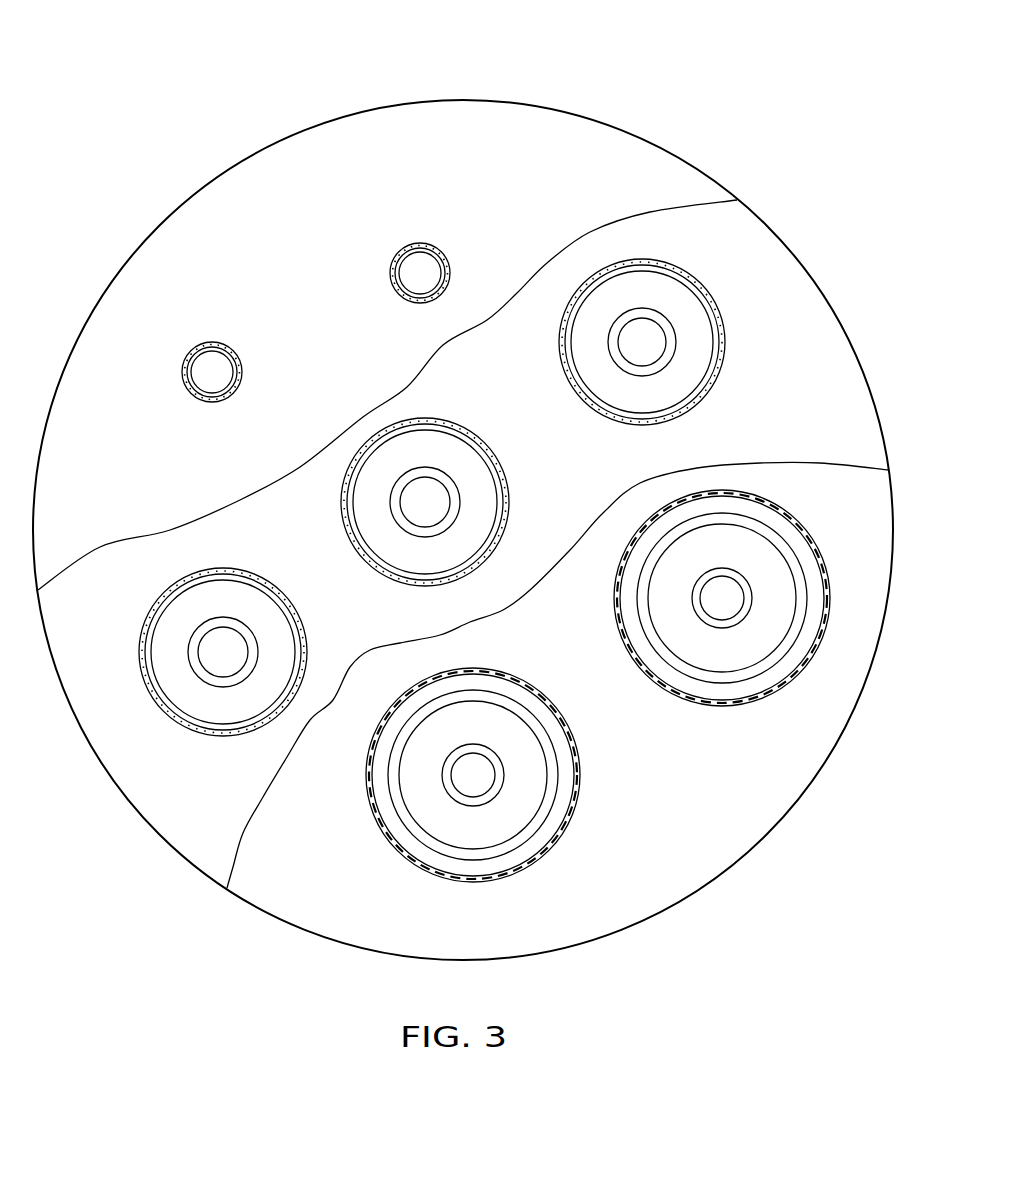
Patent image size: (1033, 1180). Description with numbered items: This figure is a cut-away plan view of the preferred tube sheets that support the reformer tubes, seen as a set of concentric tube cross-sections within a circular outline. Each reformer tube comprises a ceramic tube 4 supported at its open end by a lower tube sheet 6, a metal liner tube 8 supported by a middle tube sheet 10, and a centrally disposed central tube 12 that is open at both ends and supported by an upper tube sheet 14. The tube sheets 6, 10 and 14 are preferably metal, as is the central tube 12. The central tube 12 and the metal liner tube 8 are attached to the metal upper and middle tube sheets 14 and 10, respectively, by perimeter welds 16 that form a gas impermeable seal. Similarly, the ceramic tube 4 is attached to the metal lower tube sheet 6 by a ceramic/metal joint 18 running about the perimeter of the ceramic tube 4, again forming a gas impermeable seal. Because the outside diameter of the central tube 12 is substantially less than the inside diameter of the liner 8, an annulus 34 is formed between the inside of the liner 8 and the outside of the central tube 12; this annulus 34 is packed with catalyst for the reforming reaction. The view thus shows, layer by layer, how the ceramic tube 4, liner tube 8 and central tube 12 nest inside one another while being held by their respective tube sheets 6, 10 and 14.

The ceramic tube 4 is at (713, 697).
The lower tube sheet 6 is at (742, 838).
The metal liner tube 8 is at (562, 330).
The middle tube sheet 10 is at (773, 277).
The central tube 12 is at (410, 266).
The upper tube sheet 14 is at (580, 140).
The perimeter weld 16 is at (413, 303).
The ceramic/metal joint 18 is at (617, 623).
The annulus 34 is at (670, 318).